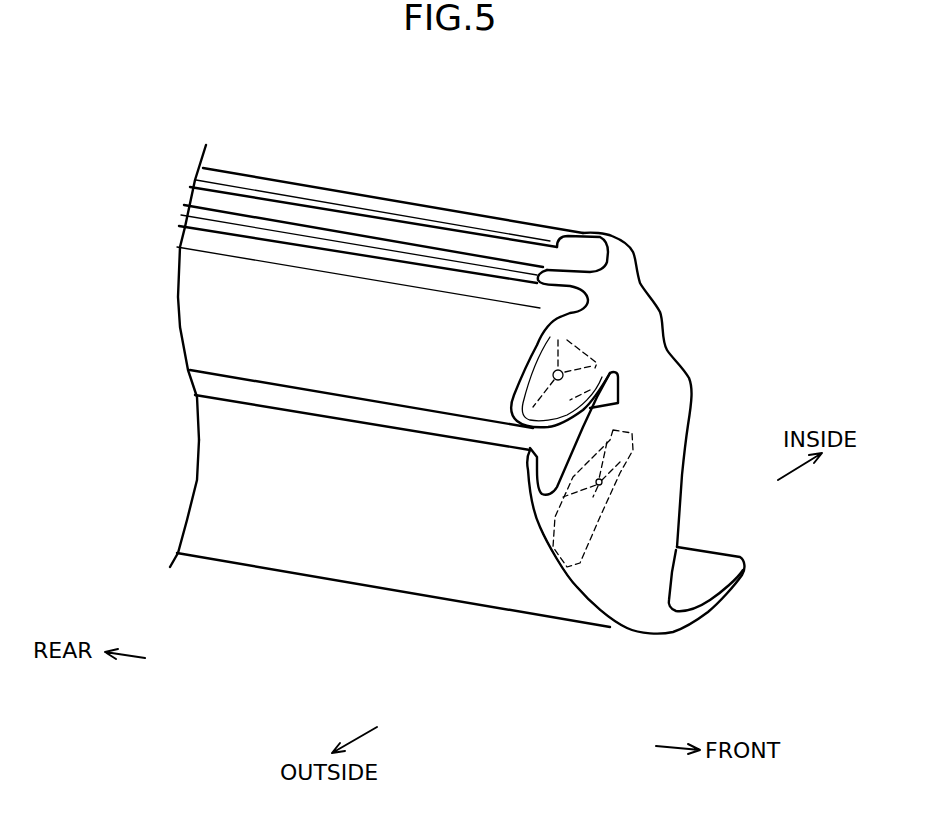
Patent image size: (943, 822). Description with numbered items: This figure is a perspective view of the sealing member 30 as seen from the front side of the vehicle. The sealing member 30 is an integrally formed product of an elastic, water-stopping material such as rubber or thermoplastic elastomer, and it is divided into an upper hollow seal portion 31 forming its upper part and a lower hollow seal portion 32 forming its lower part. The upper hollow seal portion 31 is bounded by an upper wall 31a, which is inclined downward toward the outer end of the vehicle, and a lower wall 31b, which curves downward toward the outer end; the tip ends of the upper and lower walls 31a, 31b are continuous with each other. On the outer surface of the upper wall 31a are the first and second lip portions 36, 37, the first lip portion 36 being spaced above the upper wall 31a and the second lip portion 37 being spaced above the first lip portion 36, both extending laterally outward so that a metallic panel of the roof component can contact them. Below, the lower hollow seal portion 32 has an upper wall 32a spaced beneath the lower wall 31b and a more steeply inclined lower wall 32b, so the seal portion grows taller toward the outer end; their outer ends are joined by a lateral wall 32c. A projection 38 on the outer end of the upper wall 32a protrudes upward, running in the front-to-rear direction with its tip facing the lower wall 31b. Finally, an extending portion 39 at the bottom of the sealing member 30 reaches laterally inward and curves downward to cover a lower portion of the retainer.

The sealing member 30 is at (649, 281).
The upper hollow seal portion 31 is at (213, 306).
The upper wall 31a is at (500, 333).
The lower wall 31b is at (608, 418).
The lower hollow seal portion 32 is at (273, 537).
The upper wall 32a is at (557, 462).
The lower wall 32b is at (562, 583).
The lateral wall 32c is at (410, 545).
The first lip portion 36 is at (418, 260).
The second lip portion 37 is at (322, 202).
The projection 38 is at (530, 443).
The extending portion 39 is at (737, 588).